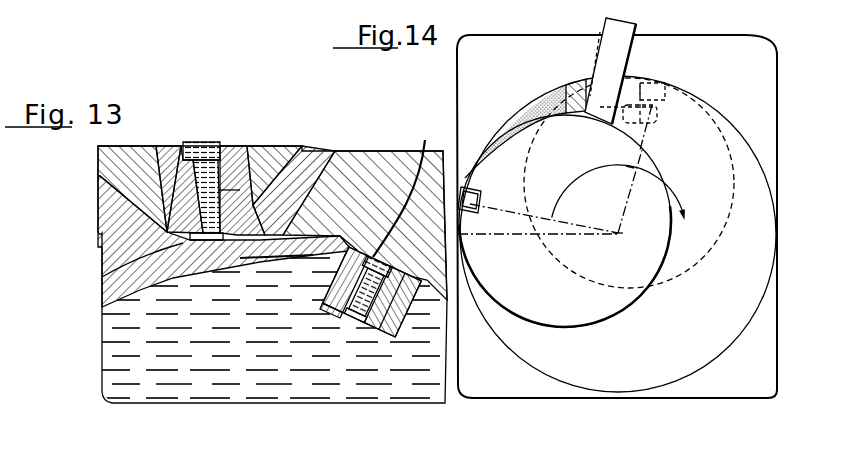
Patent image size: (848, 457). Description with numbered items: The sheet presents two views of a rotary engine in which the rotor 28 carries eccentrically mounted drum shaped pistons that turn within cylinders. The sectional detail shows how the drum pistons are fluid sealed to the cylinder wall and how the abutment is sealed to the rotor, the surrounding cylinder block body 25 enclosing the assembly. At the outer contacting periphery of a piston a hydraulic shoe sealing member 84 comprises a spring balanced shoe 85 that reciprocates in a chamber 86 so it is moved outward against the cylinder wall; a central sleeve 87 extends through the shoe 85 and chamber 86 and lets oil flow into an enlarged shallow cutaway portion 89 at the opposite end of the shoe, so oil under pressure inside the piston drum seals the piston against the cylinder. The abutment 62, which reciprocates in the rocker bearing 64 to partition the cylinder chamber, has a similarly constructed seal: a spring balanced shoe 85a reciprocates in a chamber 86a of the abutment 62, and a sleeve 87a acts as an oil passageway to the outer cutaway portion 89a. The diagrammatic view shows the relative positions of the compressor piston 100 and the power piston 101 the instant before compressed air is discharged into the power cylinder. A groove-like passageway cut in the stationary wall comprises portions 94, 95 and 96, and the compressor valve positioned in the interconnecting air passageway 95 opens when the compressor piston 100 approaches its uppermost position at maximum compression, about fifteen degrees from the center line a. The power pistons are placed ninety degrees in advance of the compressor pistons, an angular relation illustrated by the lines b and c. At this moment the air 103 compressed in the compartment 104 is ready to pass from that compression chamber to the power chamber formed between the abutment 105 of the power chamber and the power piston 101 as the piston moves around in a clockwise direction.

In FIG. 13, the housing body 25 is at (396, 148).
In FIG. 14, the housing body 25 is at (748, 22).
In FIG. 13, the rotor 28 is at (100, 297).
In FIG. 13, the abutment 62 is at (238, 146).
In FIG. 13, the rocker bearing 64 is at (283, 144).
In FIG. 13, the hydraulic shoe sealing member 84 is at (401, 336).
In FIG. 14, the hydraulic shoe sealing member 84 is at (464, 184).
In FIG. 13, the spring balanced shoe 85 is at (337, 303).
In FIG. 13, the chamber 86 is at (318, 308).
In FIG. 13, the central sleeve 87 is at (364, 320).
In FIG. 13, the enlarged shallow cutaway portion 89 is at (407, 191).
In FIG. 13, the spring balanced shoe 85a is at (143, 240).
In FIG. 13, the chamber 86a is at (184, 200).
In FIG. 13, the sleeve 87a is at (206, 228).
In FIG. 13, the outer cutaway portion 89a is at (219, 241).
In FIG. 14, the passageway portion 94 is at (576, 80).
In FIG. 14, the interconnecting air passageway 95 is at (637, 122).
In FIG. 14, the passageway portion 96 is at (665, 78).
In FIG. 14, the compressor piston 100 is at (578, 318).
In FIG. 14, the power piston 101 is at (681, 270).
In FIG. 14, the air 103 is at (543, 100).
In FIG. 14, the compartment 104 is at (545, 119).
In FIG. 14, the abutment 105 is at (633, 64).
In FIG. 14, the center line a is at (593, 237).
In FIG. 14, the line b is at (525, 211).
In FIG. 14, the line c is at (633, 167).